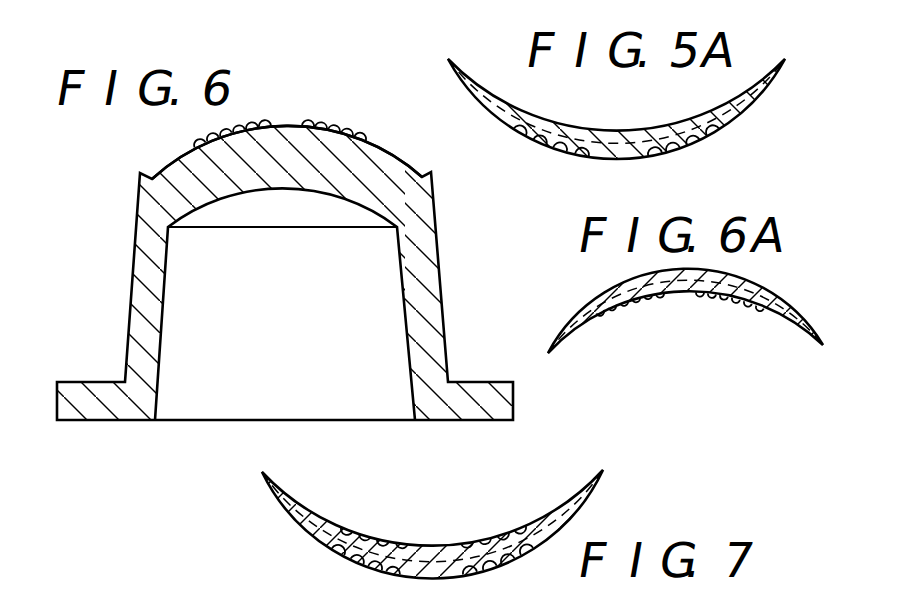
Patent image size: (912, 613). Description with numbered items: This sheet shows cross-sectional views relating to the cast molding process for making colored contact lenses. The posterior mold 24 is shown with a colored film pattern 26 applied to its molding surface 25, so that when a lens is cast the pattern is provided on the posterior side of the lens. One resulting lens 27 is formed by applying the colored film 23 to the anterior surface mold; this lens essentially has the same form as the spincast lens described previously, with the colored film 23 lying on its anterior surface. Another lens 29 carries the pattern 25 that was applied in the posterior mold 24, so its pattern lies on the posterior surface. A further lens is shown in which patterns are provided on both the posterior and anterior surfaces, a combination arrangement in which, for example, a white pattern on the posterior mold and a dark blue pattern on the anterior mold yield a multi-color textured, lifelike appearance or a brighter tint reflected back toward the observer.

In FIG. 5A, the colored film 23 is at (679, 145).
In FIG. 6, the posterior mold 24 is at (409, 162).
In FIG. 6, the molding surface 25 is at (390, 153).
In FIG. 6A, the molding surface 25 is at (710, 299).
In FIG. 6, the colored film pattern 26 is at (308, 126).
In FIG. 5A, the lens 27 is at (617, 135).
In FIG. 6A, the lens 29 is at (622, 288).